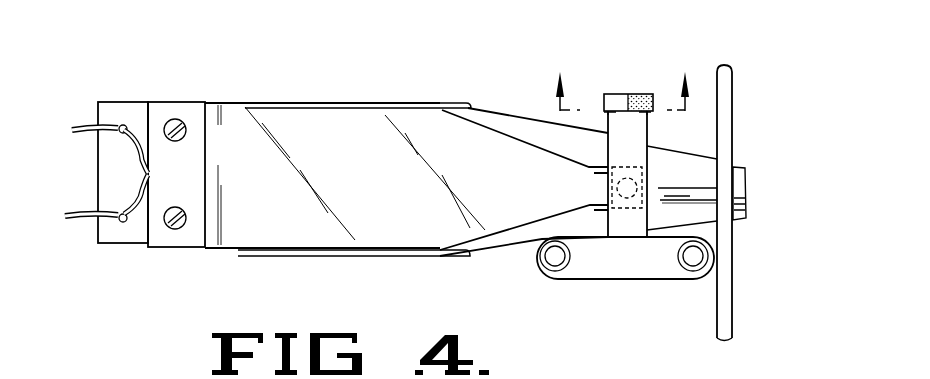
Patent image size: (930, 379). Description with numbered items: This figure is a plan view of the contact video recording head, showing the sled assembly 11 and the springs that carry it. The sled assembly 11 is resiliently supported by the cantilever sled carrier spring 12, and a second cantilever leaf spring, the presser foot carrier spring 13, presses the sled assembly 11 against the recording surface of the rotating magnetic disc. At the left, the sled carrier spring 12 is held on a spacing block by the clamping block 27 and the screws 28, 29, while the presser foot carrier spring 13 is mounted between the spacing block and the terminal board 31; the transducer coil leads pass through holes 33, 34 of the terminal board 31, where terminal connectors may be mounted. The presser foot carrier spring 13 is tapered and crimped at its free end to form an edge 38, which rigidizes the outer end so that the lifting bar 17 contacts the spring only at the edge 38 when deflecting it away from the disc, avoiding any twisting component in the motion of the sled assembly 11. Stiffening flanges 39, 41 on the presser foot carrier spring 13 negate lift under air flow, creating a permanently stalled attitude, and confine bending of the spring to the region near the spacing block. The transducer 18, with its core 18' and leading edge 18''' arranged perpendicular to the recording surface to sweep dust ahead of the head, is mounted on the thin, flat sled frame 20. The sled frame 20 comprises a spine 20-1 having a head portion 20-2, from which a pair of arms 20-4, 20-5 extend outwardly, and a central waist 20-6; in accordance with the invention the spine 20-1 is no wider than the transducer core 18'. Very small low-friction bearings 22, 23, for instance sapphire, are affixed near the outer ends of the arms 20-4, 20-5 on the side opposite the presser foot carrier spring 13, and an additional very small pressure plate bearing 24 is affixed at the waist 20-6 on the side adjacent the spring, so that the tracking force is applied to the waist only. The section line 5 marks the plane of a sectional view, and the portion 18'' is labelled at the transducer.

The section line 5- 5 is at (625, 75).
The sled assembly 11 is at (611, 290).
The sled carrier spring 12 is at (397, 233).
The presser foot carrier spring 13 is at (502, 242).
The lifting bar 17 is at (733, 249).
The transducer 18 is at (628, 81).
The transducer core 18' is at (664, 58).
The contact portion 18'' is at (626, 64).
The leading edge 18''' is at (596, 55).
The sled frame 20 is at (607, 116).
The spine 20-1 is at (638, 133).
The head portion 20-2 is at (620, 263).
The arm 20-4 is at (583, 265).
The arm 20-5 is at (660, 263).
The waist 20-6 is at (637, 191).
The bearing 22 is at (556, 266).
The bearing 23 is at (693, 268).
The pressure plate bearing 24 is at (614, 186).
The clamping block 27 is at (160, 102).
The screw 28 is at (182, 225).
The screw 29 is at (177, 122).
The terminal board 31 is at (110, 238).
The hole 33 is at (118, 208).
The hole 34 is at (120, 123).
The edge 38 is at (697, 187).
The flange 39 is at (455, 258).
The flange 41 is at (459, 107).